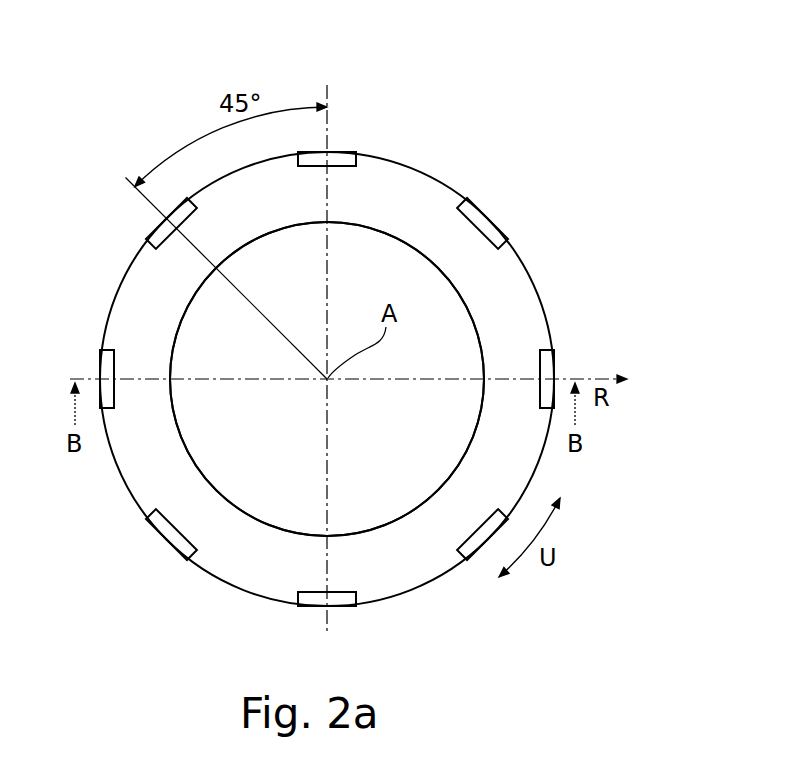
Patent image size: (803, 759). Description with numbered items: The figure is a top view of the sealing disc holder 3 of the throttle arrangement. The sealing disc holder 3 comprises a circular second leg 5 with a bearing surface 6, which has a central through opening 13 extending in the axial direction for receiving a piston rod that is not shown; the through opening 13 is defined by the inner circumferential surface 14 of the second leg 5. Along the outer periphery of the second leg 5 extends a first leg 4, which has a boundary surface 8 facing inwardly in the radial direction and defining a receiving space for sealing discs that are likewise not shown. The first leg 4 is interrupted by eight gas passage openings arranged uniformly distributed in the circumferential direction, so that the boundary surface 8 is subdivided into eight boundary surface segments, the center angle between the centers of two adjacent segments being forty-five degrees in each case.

The sealing disc holder 3 is at (512, 132).
The first leg 4 is at (483, 220).
The second leg 5 is at (532, 322).
The bearing surface 6 is at (409, 212).
The boundary surface 8 is at (113, 370).
The through opening 13 is at (282, 505).
The inner circumferential surface 14 is at (478, 406).